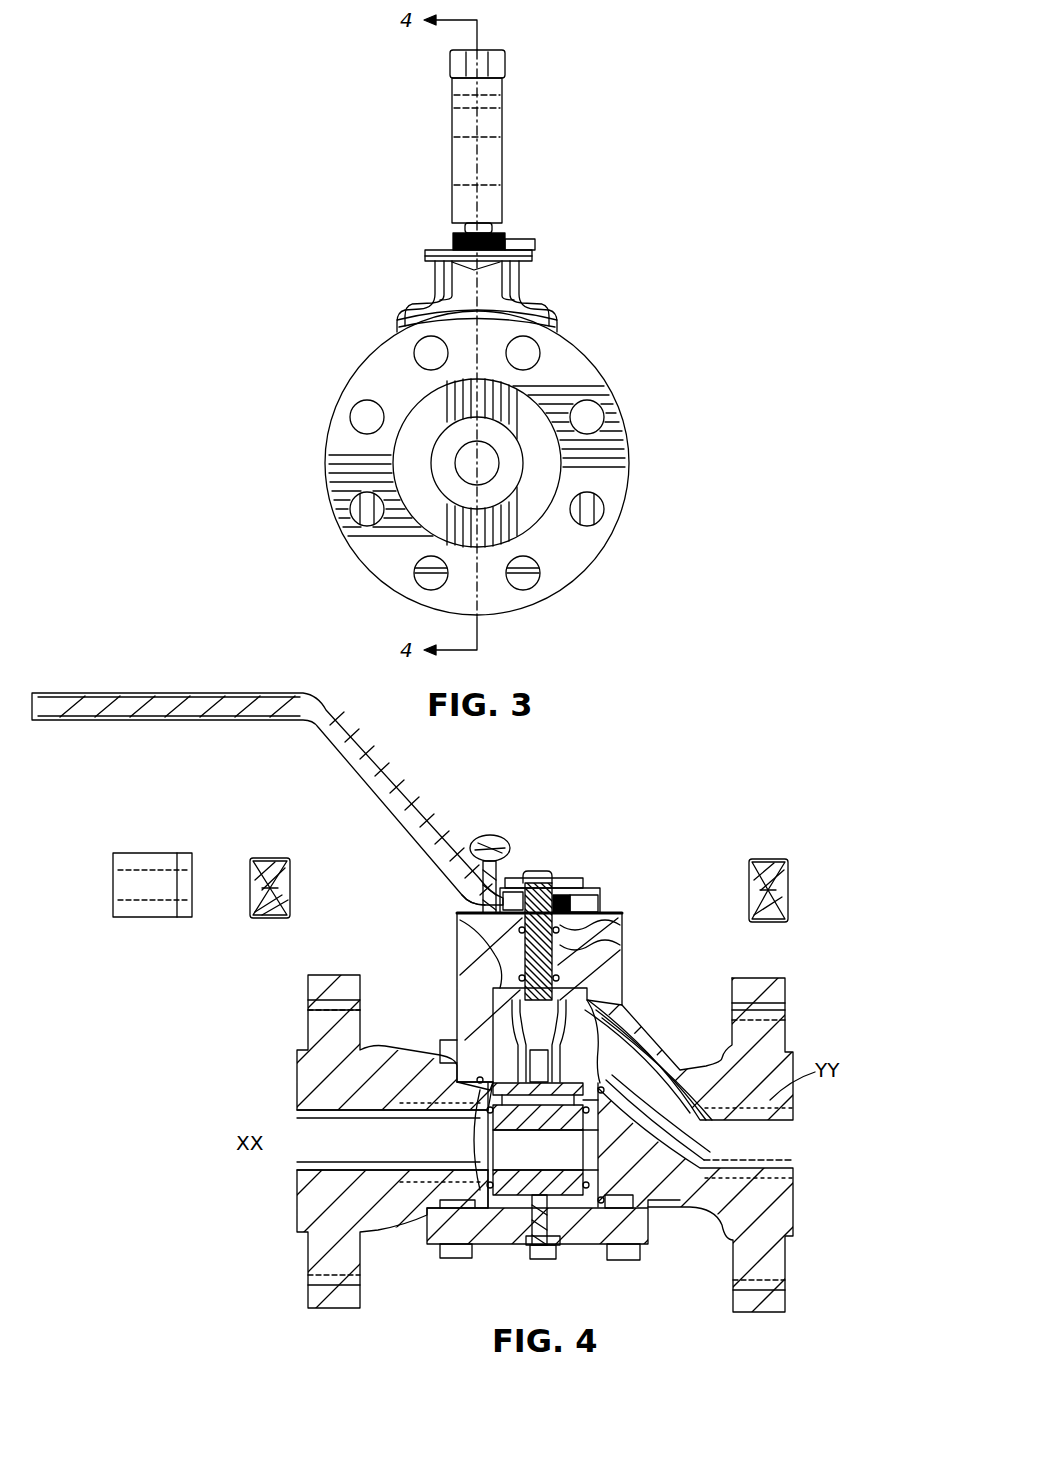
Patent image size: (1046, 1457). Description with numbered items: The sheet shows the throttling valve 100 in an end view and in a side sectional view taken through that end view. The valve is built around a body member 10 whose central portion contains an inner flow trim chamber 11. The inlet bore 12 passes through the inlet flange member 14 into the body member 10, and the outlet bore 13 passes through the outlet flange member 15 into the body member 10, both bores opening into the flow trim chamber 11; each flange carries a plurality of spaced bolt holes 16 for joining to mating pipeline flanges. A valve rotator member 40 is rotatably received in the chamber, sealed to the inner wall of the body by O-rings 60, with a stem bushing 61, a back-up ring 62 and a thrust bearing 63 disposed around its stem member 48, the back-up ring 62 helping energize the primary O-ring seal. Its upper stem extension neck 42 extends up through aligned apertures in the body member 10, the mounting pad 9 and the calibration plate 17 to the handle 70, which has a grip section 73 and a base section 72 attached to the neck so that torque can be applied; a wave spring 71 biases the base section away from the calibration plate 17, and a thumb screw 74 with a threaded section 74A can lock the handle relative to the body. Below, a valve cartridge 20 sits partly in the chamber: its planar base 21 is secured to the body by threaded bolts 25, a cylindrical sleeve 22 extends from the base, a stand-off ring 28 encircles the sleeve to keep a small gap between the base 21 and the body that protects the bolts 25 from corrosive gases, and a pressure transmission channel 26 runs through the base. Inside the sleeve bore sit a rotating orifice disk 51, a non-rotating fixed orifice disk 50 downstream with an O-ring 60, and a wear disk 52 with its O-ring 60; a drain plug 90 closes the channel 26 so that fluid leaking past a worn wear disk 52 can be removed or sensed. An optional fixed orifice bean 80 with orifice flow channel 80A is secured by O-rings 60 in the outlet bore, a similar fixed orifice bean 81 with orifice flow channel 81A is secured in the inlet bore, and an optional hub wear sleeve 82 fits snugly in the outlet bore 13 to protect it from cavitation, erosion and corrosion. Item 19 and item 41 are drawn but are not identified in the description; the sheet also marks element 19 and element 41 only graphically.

In FIG. 3, the throttling valve 100 is at (262, 184).
In FIG. 4, the throttling valve 100 is at (255, 1178).
In FIG. 3, the mounting pad 9 is at (428, 256).
In FIG. 3, the body member 10 is at (547, 307).
In FIG. 4, the inner flow trim chamber 11 is at (458, 1010).
In FIG. 3, the inlet bore 12 is at (490, 475).
In FIG. 4, the inlet bore 12 is at (764, 1148).
In FIG. 4, the outlet bore 13 is at (348, 1148).
In FIG. 3, the inlet flange member 14 is at (628, 470).
In FIG. 4, the inlet flange member 14 is at (788, 1300).
In FIG. 4, the outlet flange member 15 is at (310, 1300).
In FIG. 3, the bolt holes 16 is at (360, 422).
In FIG. 4, the bolt holes 16 is at (312, 1003).
In FIG. 3, the calibration plate 17 is at (535, 254).
In FIG. 4, the packing box 19 is at (456, 995).
In FIG. 4, the valve cartridge 20 is at (600, 1175).
In FIG. 4, the base 21 is at (485, 1255).
In FIG. 4, the sleeve 22 is at (660, 1068).
In FIG. 4, the threaded bolts 25 is at (450, 1260).
In FIG. 4, the pressure transmission channel 26 is at (508, 1248).
In FIG. 4, the stand-off ring 28 is at (652, 1230).
In FIG. 4, the valve rotator member 40 is at (560, 970).
In FIG. 4, the passage wall 41 is at (630, 1030).
In FIG. 3, the upper stem extension neck 42 is at (490, 224).
In FIG. 4, the upper stem extension neck 42 is at (545, 872).
In FIG. 4, the stem member 48 is at (610, 935).
In FIG. 4, the fixed orifice disk 50 is at (540, 1132).
In FIG. 4, the rotating orifice disk 51 is at (640, 1048).
In FIG. 4, the wear disk 52 is at (560, 1248).
In FIG. 4, the O-rings 60 is at (252, 870).
In FIG. 4, the stem bushing 61 is at (500, 945).
In FIG. 4, the back-up ring 62 is at (566, 1000).
In FIG. 4, the thrust bearing 63 is at (598, 1012).
In FIG. 3, the handle 70 is at (502, 157).
In FIG. 4, the handle 70 is at (390, 780).
In FIG. 3, the wave spring 71 is at (515, 240).
In FIG. 4, the wave spring 71 is at (592, 892).
In FIG. 3, the base section 72 is at (456, 234).
In FIG. 4, the base section 72 is at (585, 888).
In FIG. 3, the grip section 73 is at (500, 62).
In FIG. 4, the grip section 73 is at (100, 705).
In FIG. 4, the thumb screw 74 is at (488, 838).
In FIG. 4, the threaded section 74A is at (458, 895).
In FIG. 4, the fixed orifice bean 80 is at (275, 860).
In FIG. 4, the orifice flow channel 80A is at (258, 892).
In FIG. 4, the fixed orifice bean 81 is at (768, 862).
In FIG. 4, the orifice flow channel 81A is at (782, 890).
In FIG. 4, the hub wear sleeve 82 is at (150, 855).
In FIG. 4, the drain plug 90 is at (543, 1262).